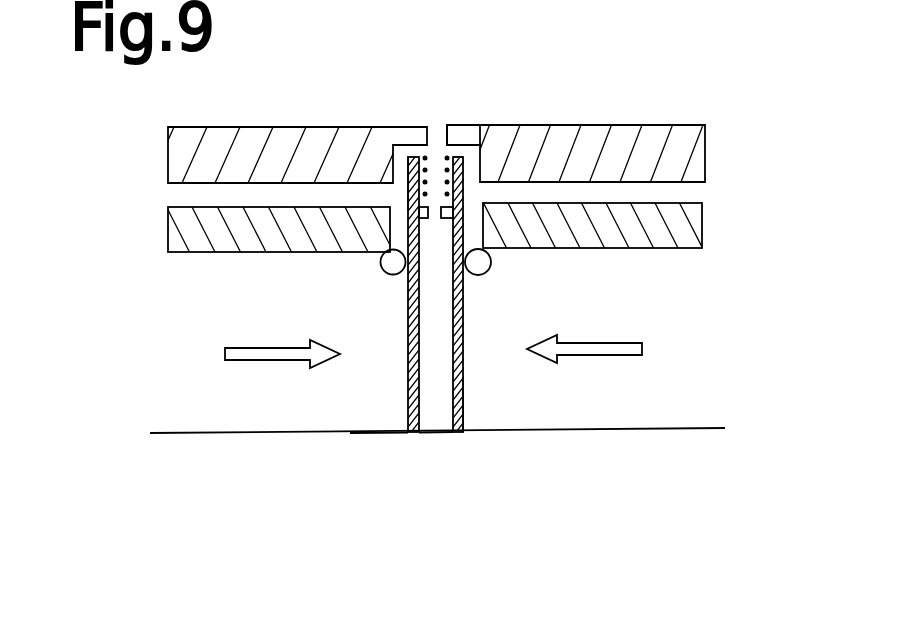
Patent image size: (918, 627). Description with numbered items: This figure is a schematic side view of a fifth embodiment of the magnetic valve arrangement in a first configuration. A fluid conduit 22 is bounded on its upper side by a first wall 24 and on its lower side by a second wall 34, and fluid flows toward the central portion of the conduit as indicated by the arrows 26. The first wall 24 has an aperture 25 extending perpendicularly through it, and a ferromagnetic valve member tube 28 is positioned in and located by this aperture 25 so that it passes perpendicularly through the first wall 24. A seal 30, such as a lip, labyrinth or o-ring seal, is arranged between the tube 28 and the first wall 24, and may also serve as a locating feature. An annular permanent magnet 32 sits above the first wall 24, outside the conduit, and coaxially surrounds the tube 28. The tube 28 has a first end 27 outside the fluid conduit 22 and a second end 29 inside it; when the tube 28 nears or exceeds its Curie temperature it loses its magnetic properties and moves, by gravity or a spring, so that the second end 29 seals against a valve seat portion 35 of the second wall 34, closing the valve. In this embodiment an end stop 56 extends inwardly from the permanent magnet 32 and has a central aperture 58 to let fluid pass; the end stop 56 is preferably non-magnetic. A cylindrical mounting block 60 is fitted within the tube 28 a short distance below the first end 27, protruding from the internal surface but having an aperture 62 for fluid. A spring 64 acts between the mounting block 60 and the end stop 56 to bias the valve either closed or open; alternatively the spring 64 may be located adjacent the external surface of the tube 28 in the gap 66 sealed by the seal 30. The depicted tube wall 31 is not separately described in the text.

The fluid conduit 22 is at (237, 407).
The first wall 24 is at (210, 243).
The aperture 25 is at (473, 227).
The arrows 26 is at (225, 354).
The first end 27 is at (467, 158).
The valve member tube 28 is at (465, 363).
The second end 29 is at (465, 408).
The seal 30 is at (478, 275).
The left wall 31 is at (408, 400).
The permanent magnet 32 is at (620, 132).
The second wall 34 is at (362, 433).
The valve seat portion 35 is at (433, 433).
The end stop 56 is at (408, 133).
The central aperture 58 is at (435, 130).
The mounting block 60 is at (423, 210).
The aperture 62 is at (440, 218).
The spring 64 is at (460, 130).
The gap 66 is at (400, 210).